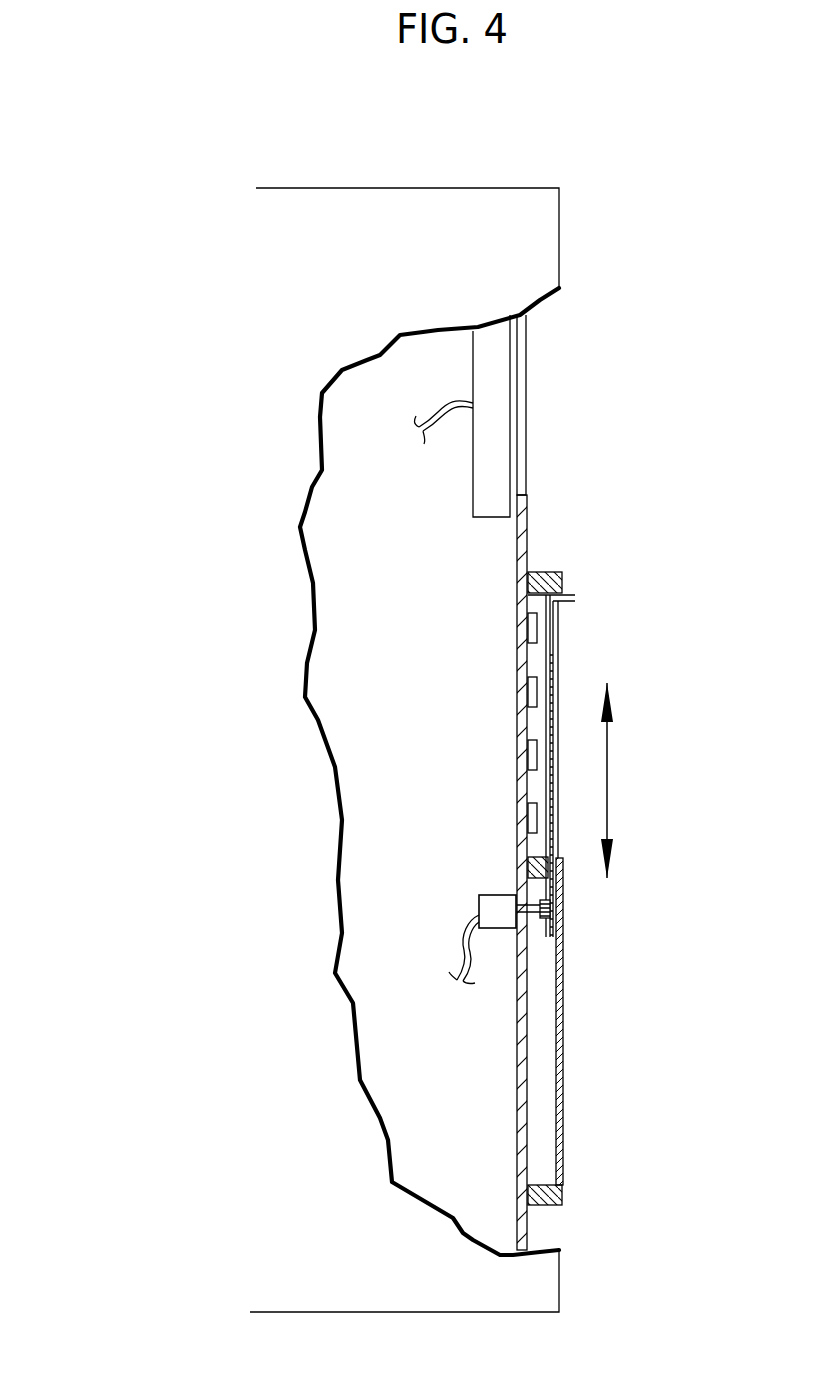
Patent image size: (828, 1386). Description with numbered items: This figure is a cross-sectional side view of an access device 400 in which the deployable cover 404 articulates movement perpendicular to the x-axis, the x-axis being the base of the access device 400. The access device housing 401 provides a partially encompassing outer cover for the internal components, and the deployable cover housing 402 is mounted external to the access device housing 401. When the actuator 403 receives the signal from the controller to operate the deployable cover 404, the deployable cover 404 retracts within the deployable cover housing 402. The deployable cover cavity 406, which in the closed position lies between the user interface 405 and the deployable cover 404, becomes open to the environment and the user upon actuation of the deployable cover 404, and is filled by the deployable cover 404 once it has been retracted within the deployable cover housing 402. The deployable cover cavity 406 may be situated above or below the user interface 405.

The access device 400 is at (143, 195).
The access device housing 401 is at (559, 205).
The deployable cover housing 402 is at (560, 1050).
The actuator 403 is at (495, 895).
The deployable cover 404 is at (550, 618).
The user interface 405 is at (533, 690).
The deployable cover cavity 406 is at (548, 1117).